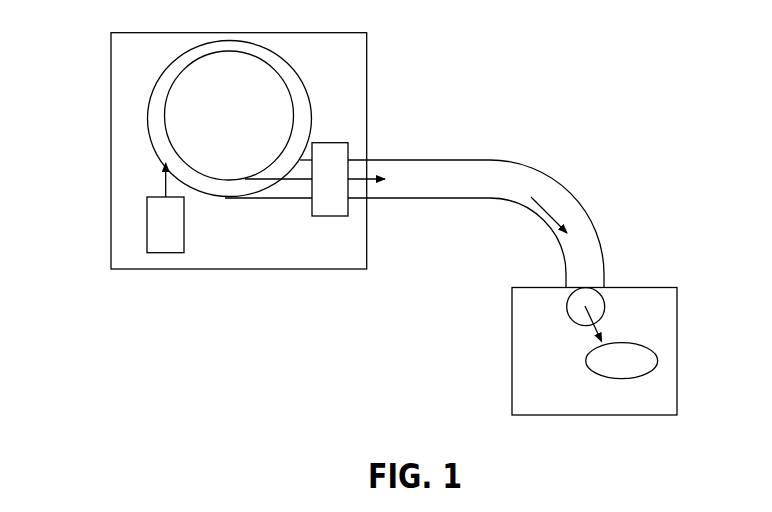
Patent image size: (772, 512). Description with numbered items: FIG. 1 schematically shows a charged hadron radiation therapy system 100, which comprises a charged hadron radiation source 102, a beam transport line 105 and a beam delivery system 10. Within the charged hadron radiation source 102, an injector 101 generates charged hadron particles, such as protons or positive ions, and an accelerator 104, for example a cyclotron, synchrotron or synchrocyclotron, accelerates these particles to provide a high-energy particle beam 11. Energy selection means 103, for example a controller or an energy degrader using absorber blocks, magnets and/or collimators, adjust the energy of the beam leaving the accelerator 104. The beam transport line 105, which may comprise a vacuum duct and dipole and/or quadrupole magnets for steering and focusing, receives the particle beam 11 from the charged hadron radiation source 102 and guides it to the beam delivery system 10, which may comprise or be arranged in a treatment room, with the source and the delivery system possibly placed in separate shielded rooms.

The charged hadron radiation therapy system 100 is at (108, 307).
The injector 101 is at (147, 233).
The charged hadron radiation source 102 is at (257, 269).
The energy selection means 103 is at (330, 216).
The accelerator 104 is at (273, 51).
The beam transport line 105 is at (495, 161).
The particle beam 11 is at (550, 213).
The beam delivery system 10 is at (677, 288).